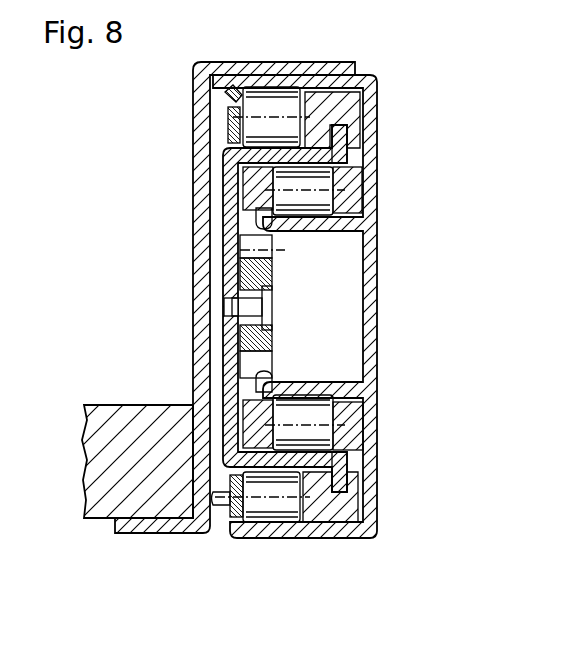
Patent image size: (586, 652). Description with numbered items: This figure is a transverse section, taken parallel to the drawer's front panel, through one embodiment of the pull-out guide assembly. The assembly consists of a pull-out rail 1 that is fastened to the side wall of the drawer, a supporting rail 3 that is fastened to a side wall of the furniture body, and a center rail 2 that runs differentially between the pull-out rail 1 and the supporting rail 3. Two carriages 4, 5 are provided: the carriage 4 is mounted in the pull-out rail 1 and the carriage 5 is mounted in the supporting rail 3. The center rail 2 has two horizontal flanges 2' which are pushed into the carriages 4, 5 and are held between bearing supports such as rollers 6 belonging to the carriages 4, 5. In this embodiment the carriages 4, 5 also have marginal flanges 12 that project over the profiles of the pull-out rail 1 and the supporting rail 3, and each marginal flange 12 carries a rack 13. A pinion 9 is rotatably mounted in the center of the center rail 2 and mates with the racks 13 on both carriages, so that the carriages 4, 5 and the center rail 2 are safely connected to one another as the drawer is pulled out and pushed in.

The pull-out rail 1 is at (382, 78).
The center rail 2 is at (235, 308).
The horizontal flanges of center rail 2' is at (383, 319).
The supporting rail 3 is at (368, 423).
The carriage 4 is at (350, 187).
The carriage 5 is at (352, 507).
The rollers 6 is at (282, 513).
The pinion 9 is at (270, 273).
The marginal flanges 12 is at (250, 226).
The rack 13 is at (268, 247).